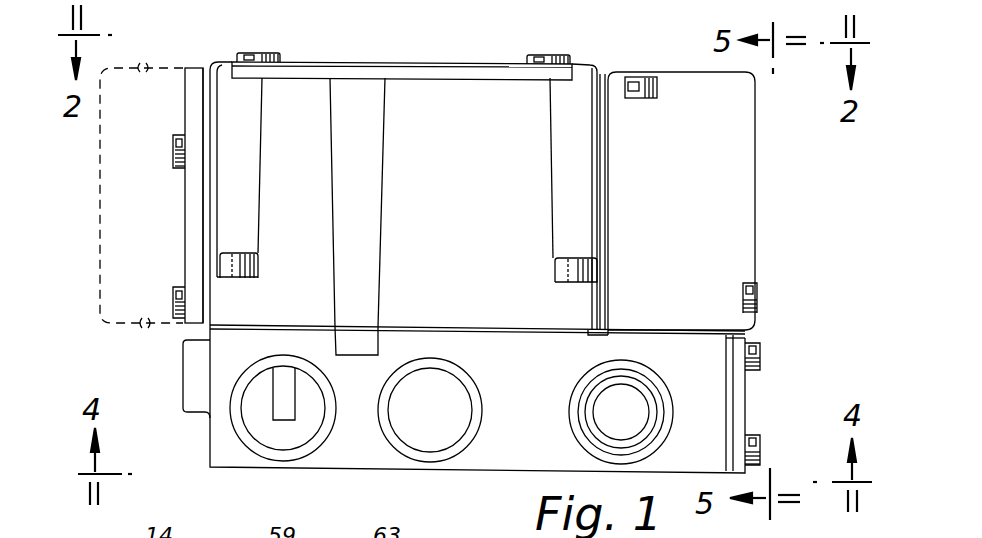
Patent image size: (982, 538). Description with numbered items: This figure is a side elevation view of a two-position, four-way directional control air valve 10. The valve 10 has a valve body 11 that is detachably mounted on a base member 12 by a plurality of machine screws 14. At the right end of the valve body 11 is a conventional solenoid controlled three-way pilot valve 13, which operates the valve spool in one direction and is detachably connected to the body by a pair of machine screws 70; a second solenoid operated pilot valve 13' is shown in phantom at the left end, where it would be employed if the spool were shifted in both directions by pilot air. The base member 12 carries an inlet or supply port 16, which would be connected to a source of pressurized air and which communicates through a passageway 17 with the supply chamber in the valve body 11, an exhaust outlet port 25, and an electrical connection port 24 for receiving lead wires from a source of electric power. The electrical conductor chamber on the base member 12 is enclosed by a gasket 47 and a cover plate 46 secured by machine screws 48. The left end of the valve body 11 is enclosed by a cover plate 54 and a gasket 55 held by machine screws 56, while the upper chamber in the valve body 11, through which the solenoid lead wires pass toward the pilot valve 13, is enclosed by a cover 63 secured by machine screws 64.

The directional control air valve 10 is at (172, 211).
The valve body 11 is at (232, 307).
The base member 12 is at (222, 437).
The solenoid controlled three-way pilot valve 13 is at (713, 203).
The second solenoid operated pilot valve 13' is at (141, 182).
The machine screws 14 is at (253, 264).
The inlet or supply port 16 is at (318, 416).
The passageway 17 is at (288, 387).
The electrical connection port 24 is at (640, 413).
The exhaust outlet port 25 is at (460, 388).
The cover plate 46 is at (742, 388).
The gasket 47 is at (732, 412).
The machine screws 48 is at (762, 350).
The cover plate 54 is at (192, 228).
The gasket 55 is at (206, 243).
The machine screws 56 is at (173, 155).
The cover 63 is at (428, 70).
The machine screws 64 is at (258, 58).
The machine screws 70 is at (760, 285).